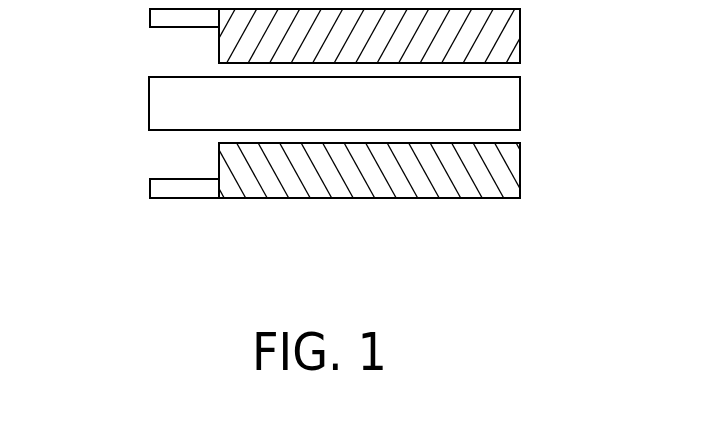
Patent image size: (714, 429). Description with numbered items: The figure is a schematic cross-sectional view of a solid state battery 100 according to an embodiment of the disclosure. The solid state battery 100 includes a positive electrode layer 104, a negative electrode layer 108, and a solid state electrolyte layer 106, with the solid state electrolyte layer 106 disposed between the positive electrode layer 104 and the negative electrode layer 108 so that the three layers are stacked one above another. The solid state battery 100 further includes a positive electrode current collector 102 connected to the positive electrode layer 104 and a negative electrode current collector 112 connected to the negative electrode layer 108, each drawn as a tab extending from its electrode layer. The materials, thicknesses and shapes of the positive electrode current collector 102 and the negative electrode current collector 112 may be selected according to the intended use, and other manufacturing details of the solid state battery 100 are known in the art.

The solid state battery 100 is at (517, 269).
The positive electrode current collector 102 is at (150, 18).
The positive electrode layer 104 is at (522, 34).
The solid state electrolyte layer 106 is at (522, 103).
The negative electrode layer 108 is at (522, 168).
The negative electrode current collector 112 is at (150, 188).